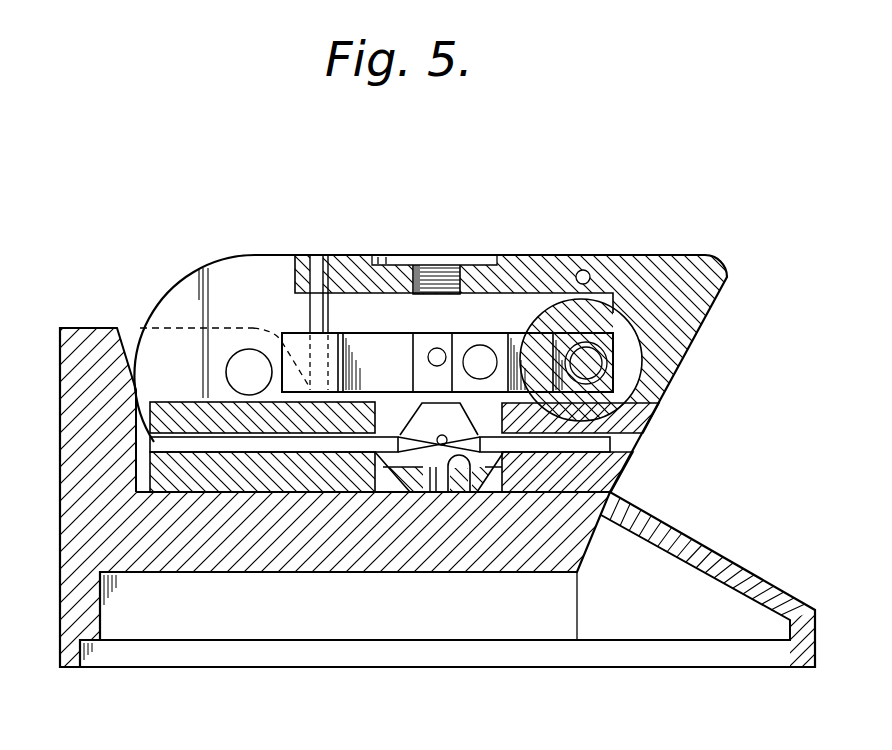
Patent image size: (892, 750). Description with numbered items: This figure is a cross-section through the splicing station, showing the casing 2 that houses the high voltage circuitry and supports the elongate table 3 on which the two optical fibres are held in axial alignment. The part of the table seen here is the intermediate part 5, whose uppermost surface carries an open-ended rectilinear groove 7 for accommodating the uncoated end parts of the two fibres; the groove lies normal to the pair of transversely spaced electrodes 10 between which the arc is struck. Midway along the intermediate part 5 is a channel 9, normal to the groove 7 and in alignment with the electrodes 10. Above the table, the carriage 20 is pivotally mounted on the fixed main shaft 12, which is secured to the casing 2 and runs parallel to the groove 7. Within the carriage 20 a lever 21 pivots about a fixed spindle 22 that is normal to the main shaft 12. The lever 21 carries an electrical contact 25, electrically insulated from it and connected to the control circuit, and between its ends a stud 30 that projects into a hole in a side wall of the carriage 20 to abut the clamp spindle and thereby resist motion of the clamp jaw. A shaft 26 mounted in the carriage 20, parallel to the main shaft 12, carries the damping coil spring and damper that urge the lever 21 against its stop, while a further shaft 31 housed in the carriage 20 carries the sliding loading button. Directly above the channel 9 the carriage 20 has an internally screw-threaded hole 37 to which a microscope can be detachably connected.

The casing 2 is at (78, 600).
The elongate table 3 is at (476, 492).
The intermediate part 5 is at (402, 483).
The rectilinear groove 7 is at (440, 457).
The channel 9 is at (452, 478).
The electrodes 10 is at (602, 444).
The main shaft 12 is at (238, 372).
The carriage 20 is at (667, 250).
The lever 21 is at (382, 357).
The fixed spindle 22 is at (310, 307).
The electrical contact 25 is at (483, 360).
The shaft 26 is at (587, 363).
The stud 30 is at (437, 356).
The shaft 31 is at (583, 270).
The internally screw-threaded hole 37 is at (434, 272).